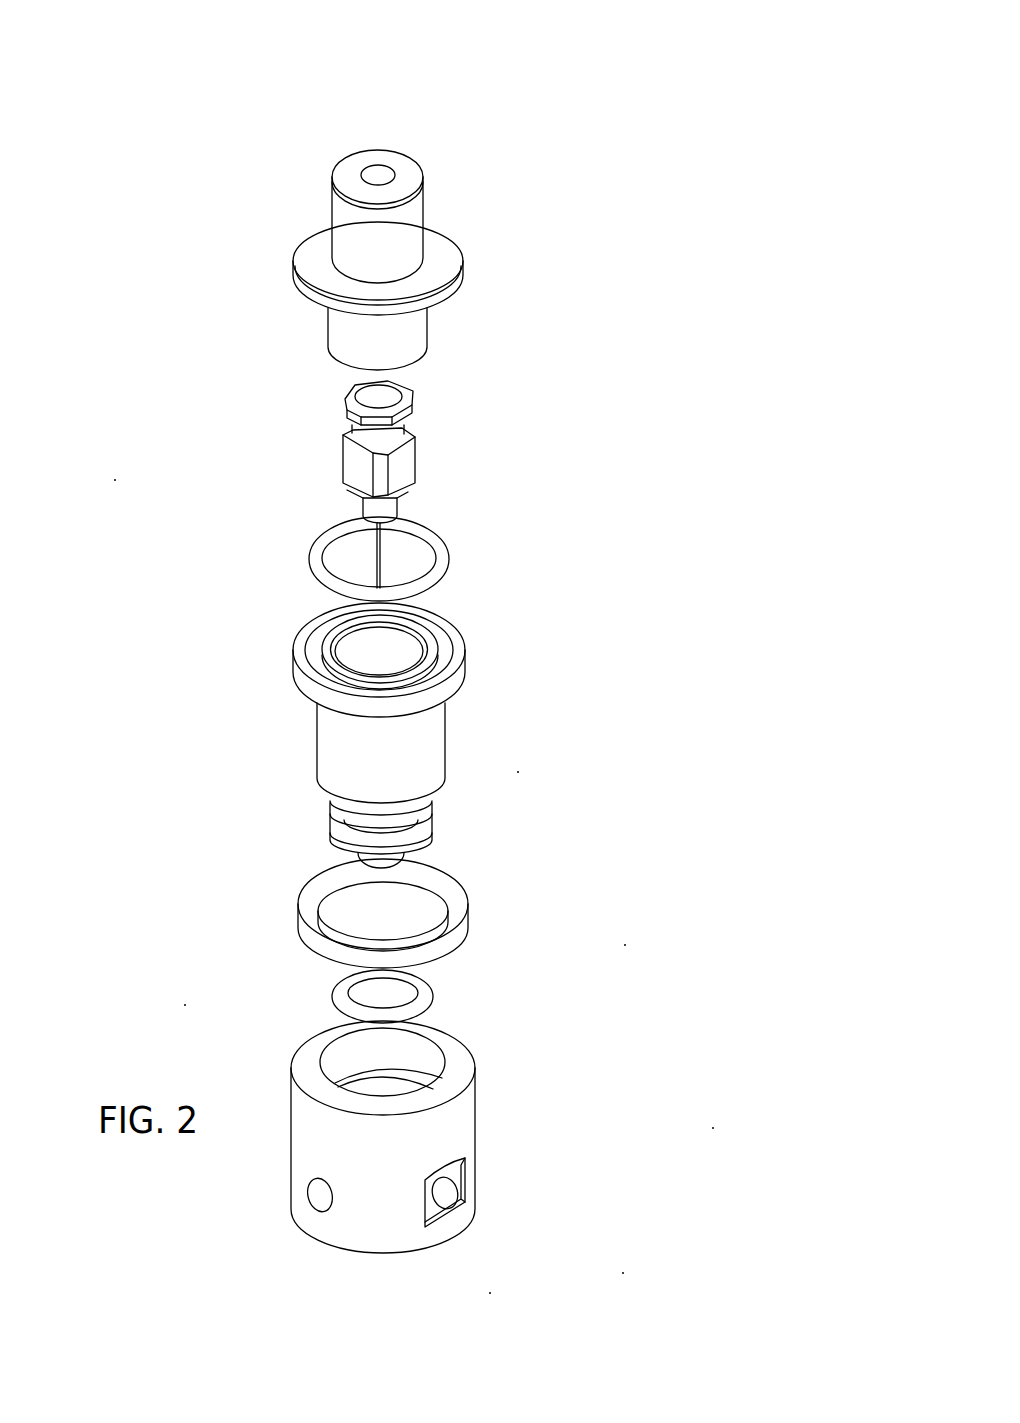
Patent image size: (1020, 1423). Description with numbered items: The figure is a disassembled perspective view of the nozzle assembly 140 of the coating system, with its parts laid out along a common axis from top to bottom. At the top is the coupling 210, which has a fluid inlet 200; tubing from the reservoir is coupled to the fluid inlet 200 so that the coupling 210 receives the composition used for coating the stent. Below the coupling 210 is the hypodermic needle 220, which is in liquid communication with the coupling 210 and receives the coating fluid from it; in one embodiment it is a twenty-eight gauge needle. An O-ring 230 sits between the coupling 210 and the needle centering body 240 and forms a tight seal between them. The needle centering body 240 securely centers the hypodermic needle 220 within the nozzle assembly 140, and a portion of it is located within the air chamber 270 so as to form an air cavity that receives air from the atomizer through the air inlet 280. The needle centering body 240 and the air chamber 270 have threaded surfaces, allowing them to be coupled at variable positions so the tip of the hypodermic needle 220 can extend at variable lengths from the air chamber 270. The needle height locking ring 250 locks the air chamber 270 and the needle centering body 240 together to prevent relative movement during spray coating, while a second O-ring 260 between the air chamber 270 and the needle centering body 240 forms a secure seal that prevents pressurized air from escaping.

The nozzle assembly 140 is at (118, 52).
The fluid inlet 200 is at (373, 167).
The coupling 210 is at (433, 333).
The hypodermic needle 220 is at (417, 442).
The O-ring 230 is at (453, 555).
The needle centering body 240 is at (315, 742).
The needle height locking ring 250 is at (297, 907).
The O-ring 260 is at (435, 1002).
The air chamber 270 is at (477, 1107).
The air inlet 280 is at (455, 1205).